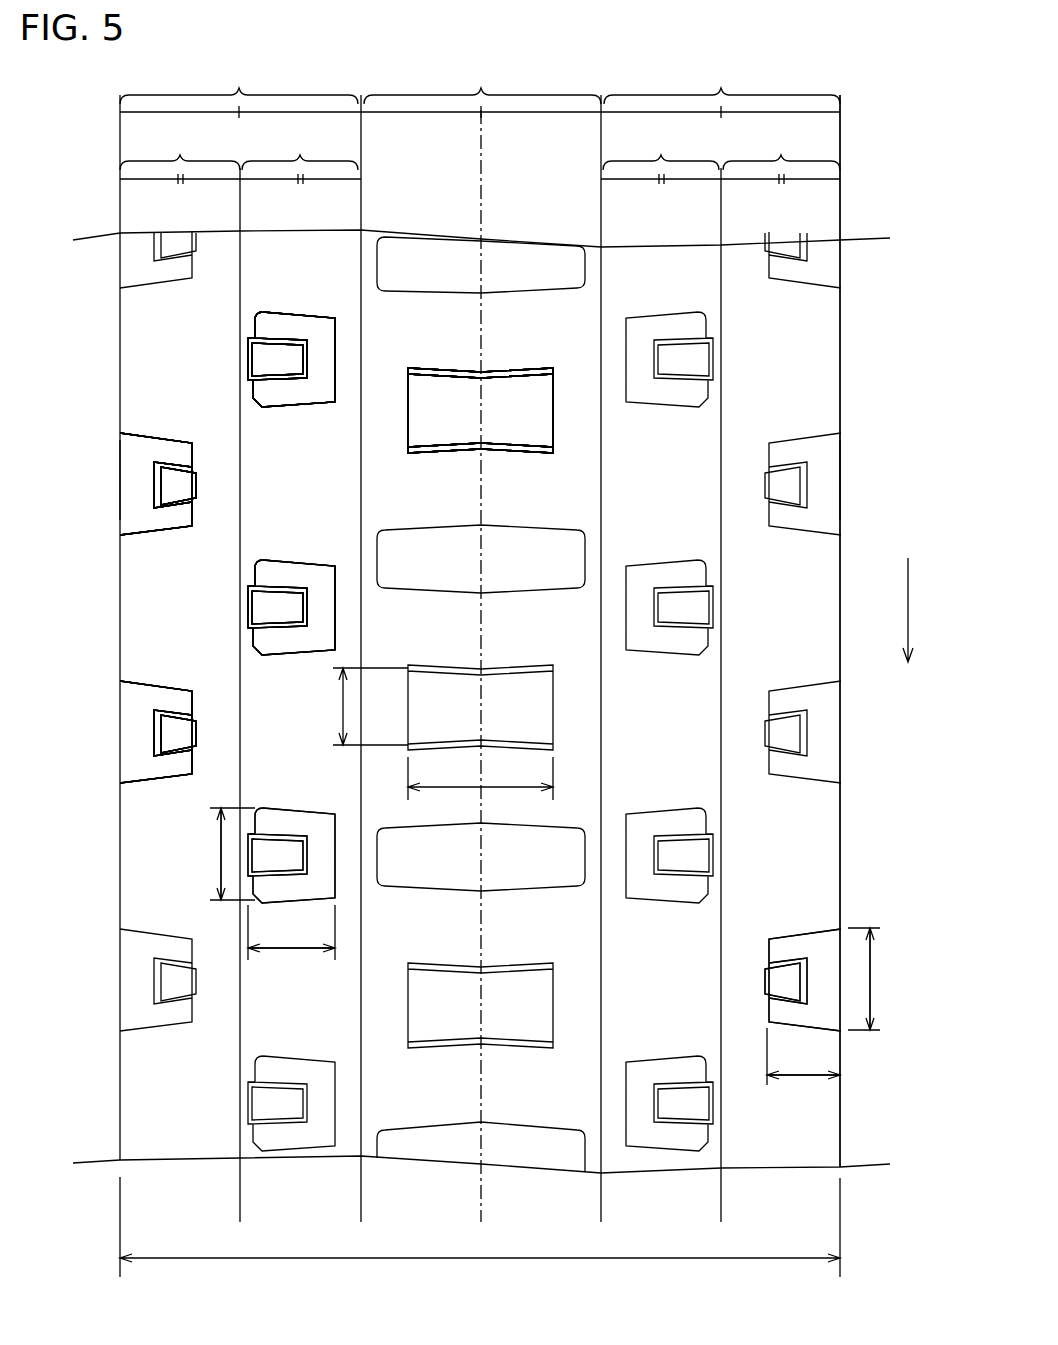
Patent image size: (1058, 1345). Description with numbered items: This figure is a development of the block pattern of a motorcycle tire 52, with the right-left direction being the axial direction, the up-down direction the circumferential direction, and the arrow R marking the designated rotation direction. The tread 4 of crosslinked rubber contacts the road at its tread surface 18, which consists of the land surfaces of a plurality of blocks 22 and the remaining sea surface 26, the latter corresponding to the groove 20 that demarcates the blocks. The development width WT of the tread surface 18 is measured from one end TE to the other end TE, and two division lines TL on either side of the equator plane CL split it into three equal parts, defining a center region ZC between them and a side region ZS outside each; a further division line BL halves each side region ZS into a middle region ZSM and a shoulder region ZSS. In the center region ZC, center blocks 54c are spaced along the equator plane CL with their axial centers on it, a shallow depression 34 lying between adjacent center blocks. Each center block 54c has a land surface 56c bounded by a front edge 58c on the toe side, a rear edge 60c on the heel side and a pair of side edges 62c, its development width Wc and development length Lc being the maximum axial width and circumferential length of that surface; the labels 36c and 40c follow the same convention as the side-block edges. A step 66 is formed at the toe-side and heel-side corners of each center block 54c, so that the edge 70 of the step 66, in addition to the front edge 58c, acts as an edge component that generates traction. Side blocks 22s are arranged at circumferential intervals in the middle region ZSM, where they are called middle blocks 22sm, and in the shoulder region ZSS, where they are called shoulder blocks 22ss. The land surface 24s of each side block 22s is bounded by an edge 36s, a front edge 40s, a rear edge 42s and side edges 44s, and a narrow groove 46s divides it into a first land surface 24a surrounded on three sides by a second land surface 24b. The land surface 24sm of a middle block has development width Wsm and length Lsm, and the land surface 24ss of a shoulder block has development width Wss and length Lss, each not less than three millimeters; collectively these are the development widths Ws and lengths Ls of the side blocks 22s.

The tread 4 is at (856, 236).
The motorcycle tire 52 is at (872, 631).
The tread surface 18 is at (108, 232).
The groove 20 is at (446, 1192).
The sea surface 26 is at (140, 1090).
The block 22 is at (489, 669).
The side block 22s is at (807, 445).
The middle block 22sm is at (480, 331).
The shoulder block 22ss is at (472, 457).
The land surface of side block 24s is at (819, 521).
The first land surface 24a is at (779, 481).
The second land surface 24b is at (639, 408).
The land surface of middle block 24sm is at (288, 808).
The land surface of shoulder block 24ss is at (808, 940).
The depression 34 is at (550, 542).
The edge of land surface of side block 36s is at (782, 527).
The center block side surface 36c is at (556, 430).
The front edge 40s is at (814, 784).
The center block chamfer 40c is at (476, 742).
The rear edge 42s is at (806, 683).
The side edges 44s is at (807, 709).
The narrow groove 46s is at (808, 732).
The center block 54c is at (538, 373).
The land surface of center block 56c is at (428, 388).
The front edge 58c is at (416, 454).
The rear edge 60c is at (502, 368).
The side edges 62c is at (554, 387).
The step 66 is at (461, 372).
The edge of step 70 is at (458, 454).
The division line TL is at (601, 136).
The division line BL is at (752, 206).
The equator plane CL is at (483, 1201).
The end of tread surface TE is at (841, 473).
The development width of tread surface WT is at (480, 1274).
The side region ZS is at (480, 84).
The center region ZC is at (482, 84).
The shoulder region ZSS is at (480, 152).
The middle region ZSM is at (480, 152).
The development length of center block Lc is at (359, 706).
The development width of center block Wc is at (480, 784).
The development length of middle block Lsm is at (215, 854).
The development length of shoulder block Lss is at (883, 979).
The development length of side block Ls is at (548, 919).
The development width of middle block Wsm is at (291, 945).
The development width of shoulder block Wss is at (803, 1069).
The development width of side block Ws is at (544, 1039).
The rotation direction R is at (915, 610).